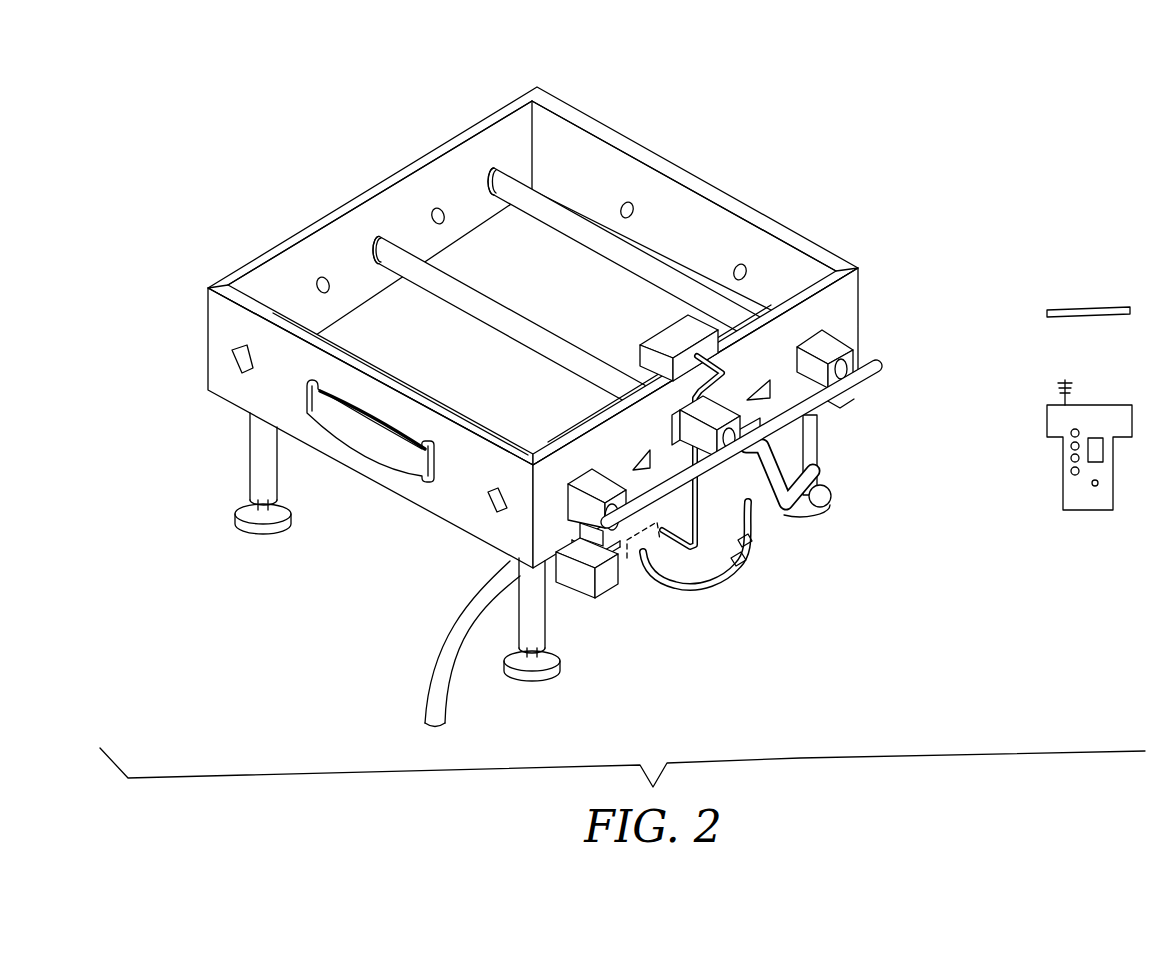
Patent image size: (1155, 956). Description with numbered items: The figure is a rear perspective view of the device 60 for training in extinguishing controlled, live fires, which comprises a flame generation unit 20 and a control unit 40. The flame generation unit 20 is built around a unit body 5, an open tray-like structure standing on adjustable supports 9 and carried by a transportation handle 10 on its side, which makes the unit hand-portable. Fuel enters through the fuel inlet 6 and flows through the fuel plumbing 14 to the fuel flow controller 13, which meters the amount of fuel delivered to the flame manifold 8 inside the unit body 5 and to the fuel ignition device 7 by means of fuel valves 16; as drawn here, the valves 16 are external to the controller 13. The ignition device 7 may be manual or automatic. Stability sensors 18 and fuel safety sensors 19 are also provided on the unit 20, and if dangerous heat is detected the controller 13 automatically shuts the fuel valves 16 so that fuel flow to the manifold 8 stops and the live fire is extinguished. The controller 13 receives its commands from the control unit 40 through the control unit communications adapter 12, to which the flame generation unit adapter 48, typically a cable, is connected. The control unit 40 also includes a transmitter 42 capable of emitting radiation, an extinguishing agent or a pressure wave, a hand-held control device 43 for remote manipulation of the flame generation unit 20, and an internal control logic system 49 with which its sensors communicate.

The unit body 5 is at (495, 334).
The fuel inlet 6 is at (430, 688).
The fuel ignition device 7 is at (667, 348).
The flame manifold 8 is at (290, 318).
The adjustable supports 9 is at (255, 480).
The transportation handle 10 is at (376, 450).
The control unit communications adapter 12 is at (697, 585).
The fuel flow controller 13 is at (615, 572).
The fuel plumbing 14 is at (680, 547).
The fuel valves 16 is at (598, 480).
The stability sensors 18 is at (488, 498).
The fuel safety sensors 19 is at (640, 455).
The flame generation unit 20 is at (524, 395).
The control unit 40 is at (762, 540).
The transmitter 42 is at (1115, 306).
The hand-held control device 43 is at (1113, 405).
The flame generation unit adapter 48 is at (800, 518).
The control logic system 49 is at (633, 556).
The device for training in extinguishing fires 60 is at (634, 387).